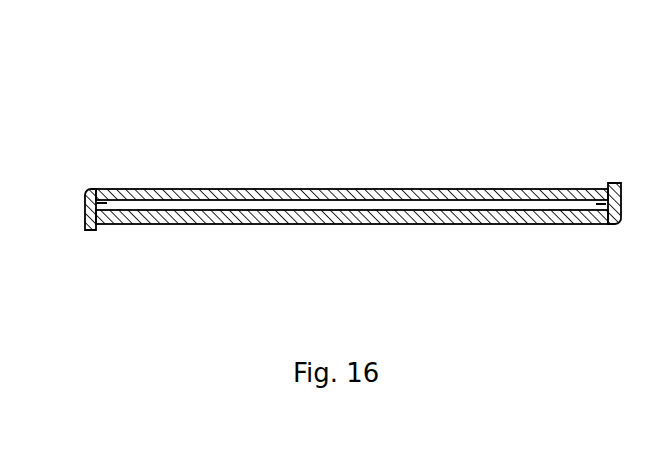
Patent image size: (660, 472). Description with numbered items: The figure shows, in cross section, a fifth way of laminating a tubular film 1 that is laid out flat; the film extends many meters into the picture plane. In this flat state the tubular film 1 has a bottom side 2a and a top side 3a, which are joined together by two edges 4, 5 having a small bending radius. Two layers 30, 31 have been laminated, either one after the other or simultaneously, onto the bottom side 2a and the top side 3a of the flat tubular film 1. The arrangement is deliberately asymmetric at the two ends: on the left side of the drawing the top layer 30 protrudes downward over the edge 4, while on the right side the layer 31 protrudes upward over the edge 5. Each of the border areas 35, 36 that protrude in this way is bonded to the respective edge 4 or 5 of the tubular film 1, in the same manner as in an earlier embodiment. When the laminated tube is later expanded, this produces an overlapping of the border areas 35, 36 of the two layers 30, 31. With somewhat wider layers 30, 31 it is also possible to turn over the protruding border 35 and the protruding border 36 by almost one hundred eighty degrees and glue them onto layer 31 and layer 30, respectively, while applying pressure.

The tubular film 1 is at (176, 189).
The bottom side 2a is at (254, 236).
The top side 3a is at (258, 170).
The edge 4 is at (112, 190).
The edge 5 is at (582, 224).
The top layer 30 is at (360, 190).
The layer 31 is at (443, 224).
The border area 35 is at (88, 226).
The border area 36 is at (108, 224).